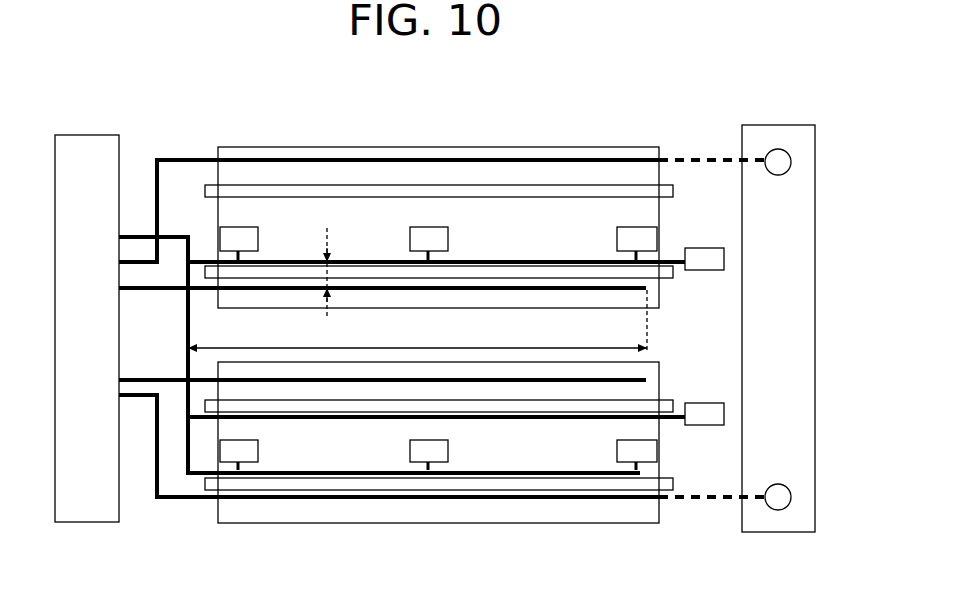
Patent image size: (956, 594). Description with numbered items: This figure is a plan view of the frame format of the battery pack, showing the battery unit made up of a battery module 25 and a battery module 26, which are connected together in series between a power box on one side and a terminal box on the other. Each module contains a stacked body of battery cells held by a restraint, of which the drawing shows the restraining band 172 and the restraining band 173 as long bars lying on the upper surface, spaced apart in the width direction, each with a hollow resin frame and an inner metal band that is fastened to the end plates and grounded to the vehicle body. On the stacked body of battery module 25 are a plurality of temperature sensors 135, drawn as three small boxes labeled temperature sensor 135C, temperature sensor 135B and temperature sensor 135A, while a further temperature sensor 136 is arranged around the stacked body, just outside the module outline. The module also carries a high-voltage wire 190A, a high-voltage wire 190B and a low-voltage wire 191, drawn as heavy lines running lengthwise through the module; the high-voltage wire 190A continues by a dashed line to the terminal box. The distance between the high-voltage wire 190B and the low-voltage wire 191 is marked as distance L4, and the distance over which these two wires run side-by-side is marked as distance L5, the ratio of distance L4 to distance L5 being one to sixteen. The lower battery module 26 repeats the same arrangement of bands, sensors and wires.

The battery module 25 is at (469, 207).
The battery module 26 is at (366, 530).
The high-voltage wire 190A is at (528, 158).
The high-voltage wire 190B is at (522, 291).
The restraining band 172 is at (674, 192).
The restraining band 173 is at (674, 280).
The temperature sensor 136 is at (698, 247).
The temperature sensors 135 is at (438, 232).
The temperature sensor 135A is at (617, 241).
The temperature sensor 135B is at (428, 227).
The temperature sensor 135C is at (240, 227).
The low-voltage wire 191 is at (582, 265).
The distance L4 is at (330, 241).
The distance L5 is at (425, 347).